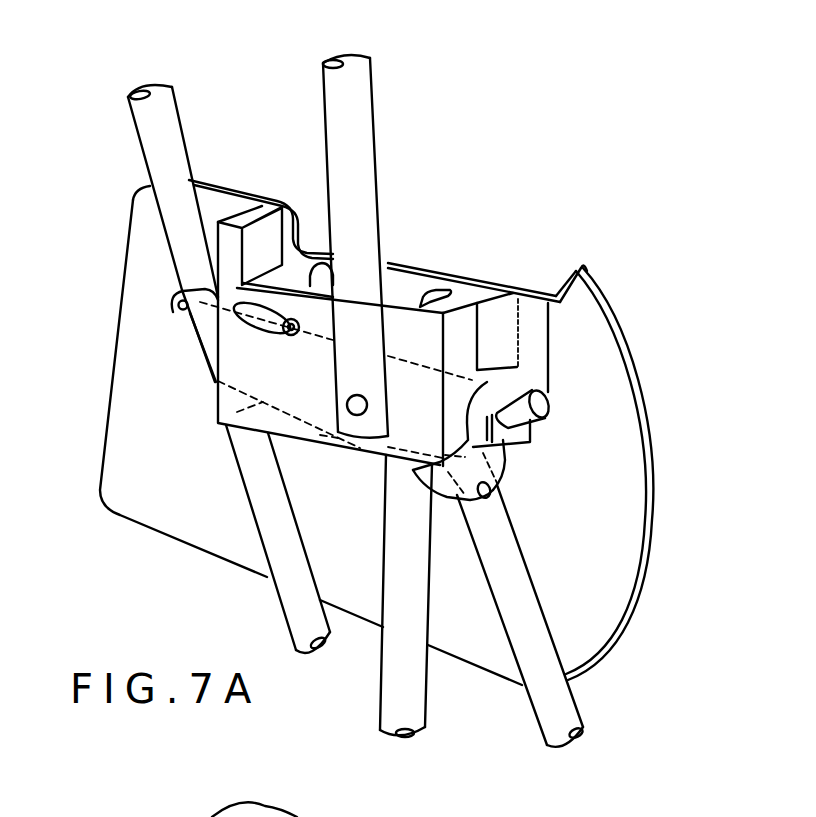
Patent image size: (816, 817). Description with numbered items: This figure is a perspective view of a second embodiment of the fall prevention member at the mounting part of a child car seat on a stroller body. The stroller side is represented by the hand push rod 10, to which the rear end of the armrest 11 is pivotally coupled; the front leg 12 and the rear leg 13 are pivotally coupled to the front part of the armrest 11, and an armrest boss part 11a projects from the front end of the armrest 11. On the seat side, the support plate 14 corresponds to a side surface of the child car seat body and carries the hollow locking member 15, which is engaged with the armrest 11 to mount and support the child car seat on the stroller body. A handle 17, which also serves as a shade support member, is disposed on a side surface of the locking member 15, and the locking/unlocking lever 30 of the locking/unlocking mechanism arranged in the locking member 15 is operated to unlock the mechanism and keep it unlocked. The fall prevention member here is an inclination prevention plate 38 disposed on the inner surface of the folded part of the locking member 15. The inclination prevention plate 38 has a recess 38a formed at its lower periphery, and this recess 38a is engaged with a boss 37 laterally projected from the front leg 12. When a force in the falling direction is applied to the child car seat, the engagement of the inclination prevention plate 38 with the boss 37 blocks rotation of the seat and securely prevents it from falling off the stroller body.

The hand push rod 10 is at (157, 147).
The armrest 11 is at (237, 412).
The armrest boss part 11a is at (543, 405).
The front leg 12 is at (525, 600).
The rear leg 13 is at (413, 610).
The support plate 14 is at (620, 427).
The locking member 15 is at (428, 335).
The handle 17 is at (367, 170).
The locking/unlocking lever 30 is at (257, 327).
The boss 37 is at (503, 508).
The inclination prevention plate 38 is at (503, 470).
The recess 38a is at (457, 503).